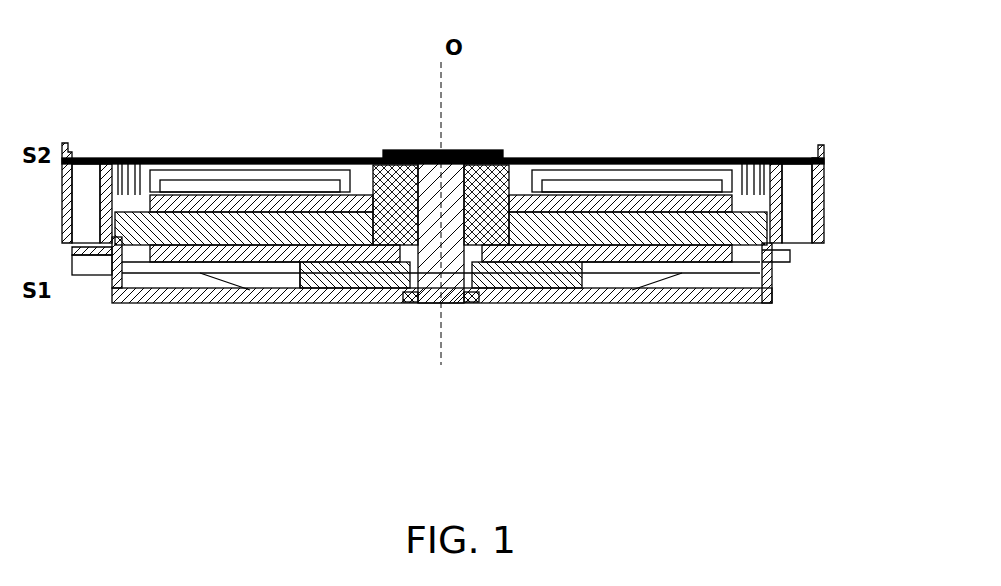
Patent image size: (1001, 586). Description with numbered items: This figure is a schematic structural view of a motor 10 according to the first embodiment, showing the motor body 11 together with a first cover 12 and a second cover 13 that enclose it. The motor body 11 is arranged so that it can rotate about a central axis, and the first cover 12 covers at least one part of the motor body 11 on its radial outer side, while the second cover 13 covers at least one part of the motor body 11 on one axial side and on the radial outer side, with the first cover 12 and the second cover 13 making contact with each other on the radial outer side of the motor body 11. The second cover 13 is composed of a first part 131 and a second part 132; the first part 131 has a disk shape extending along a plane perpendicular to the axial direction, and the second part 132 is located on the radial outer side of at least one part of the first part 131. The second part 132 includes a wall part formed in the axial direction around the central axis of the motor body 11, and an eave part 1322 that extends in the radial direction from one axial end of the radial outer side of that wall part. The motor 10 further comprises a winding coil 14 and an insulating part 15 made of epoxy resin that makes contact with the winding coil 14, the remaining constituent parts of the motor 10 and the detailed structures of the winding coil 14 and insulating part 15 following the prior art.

The motor 10 is at (76, 48).
The motor body 11 is at (371, 221).
The first cover 12 is at (820, 193).
The second cover 13 is at (714, 294).
The first part 131 is at (746, 298).
The second part 132 is at (772, 258).
The eave part 1322 is at (786, 259).
The winding coil 14 is at (683, 234).
The insulating part 15 is at (750, 219).